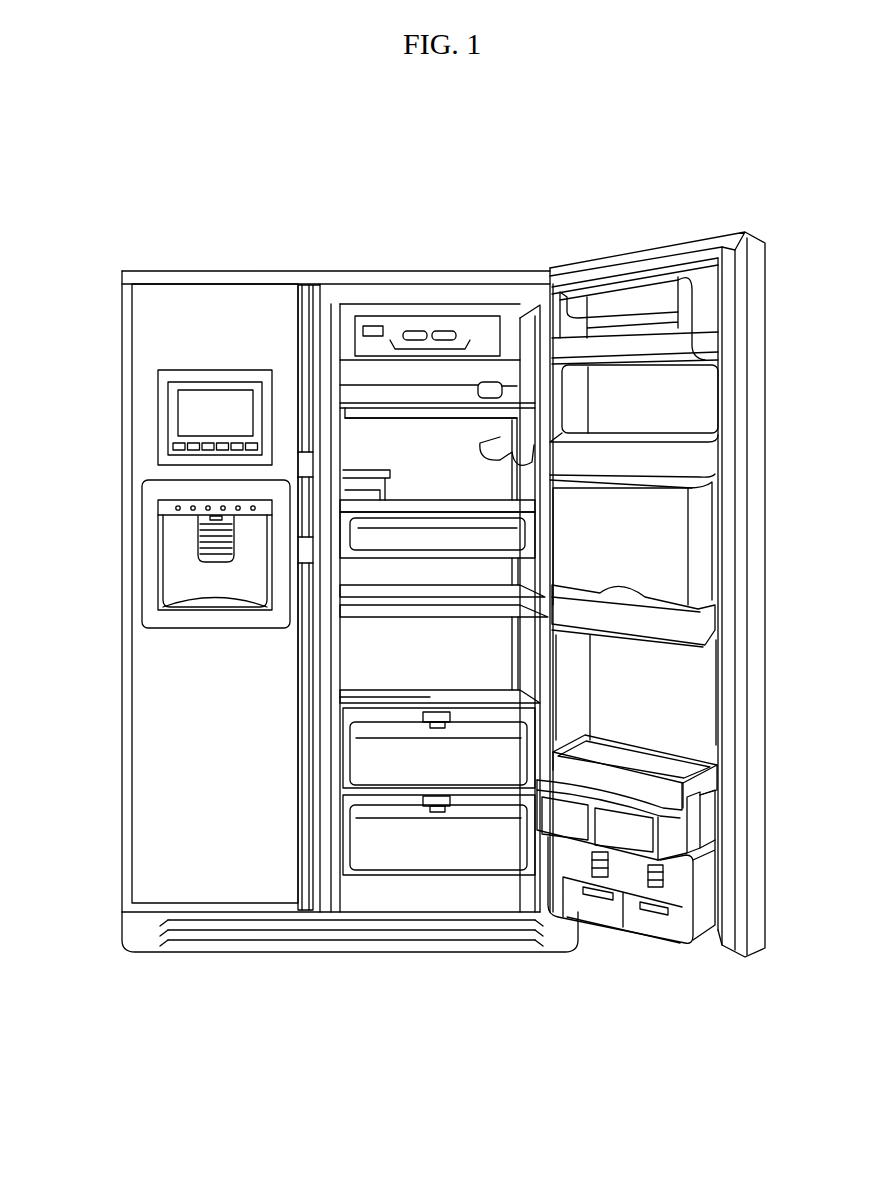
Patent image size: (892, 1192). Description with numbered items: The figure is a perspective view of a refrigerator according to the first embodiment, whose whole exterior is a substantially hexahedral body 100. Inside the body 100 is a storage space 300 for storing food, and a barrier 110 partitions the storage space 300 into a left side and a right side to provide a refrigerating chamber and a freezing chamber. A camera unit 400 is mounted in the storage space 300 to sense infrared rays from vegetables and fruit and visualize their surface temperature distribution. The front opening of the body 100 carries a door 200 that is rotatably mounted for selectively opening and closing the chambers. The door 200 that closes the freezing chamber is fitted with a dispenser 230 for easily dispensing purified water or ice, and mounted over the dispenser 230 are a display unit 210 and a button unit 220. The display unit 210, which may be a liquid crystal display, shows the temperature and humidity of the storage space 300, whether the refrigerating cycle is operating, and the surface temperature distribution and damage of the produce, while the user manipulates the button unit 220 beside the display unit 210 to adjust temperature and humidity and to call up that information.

The body 100 is at (451, 252).
The barrier 110 is at (330, 300).
The door 200 is at (218, 296).
The display unit 210 is at (187, 415).
The button unit 220 is at (172, 447).
The dispenser 230 is at (178, 562).
The storage space 300 is at (450, 658).
The camera unit 400 is at (433, 725).